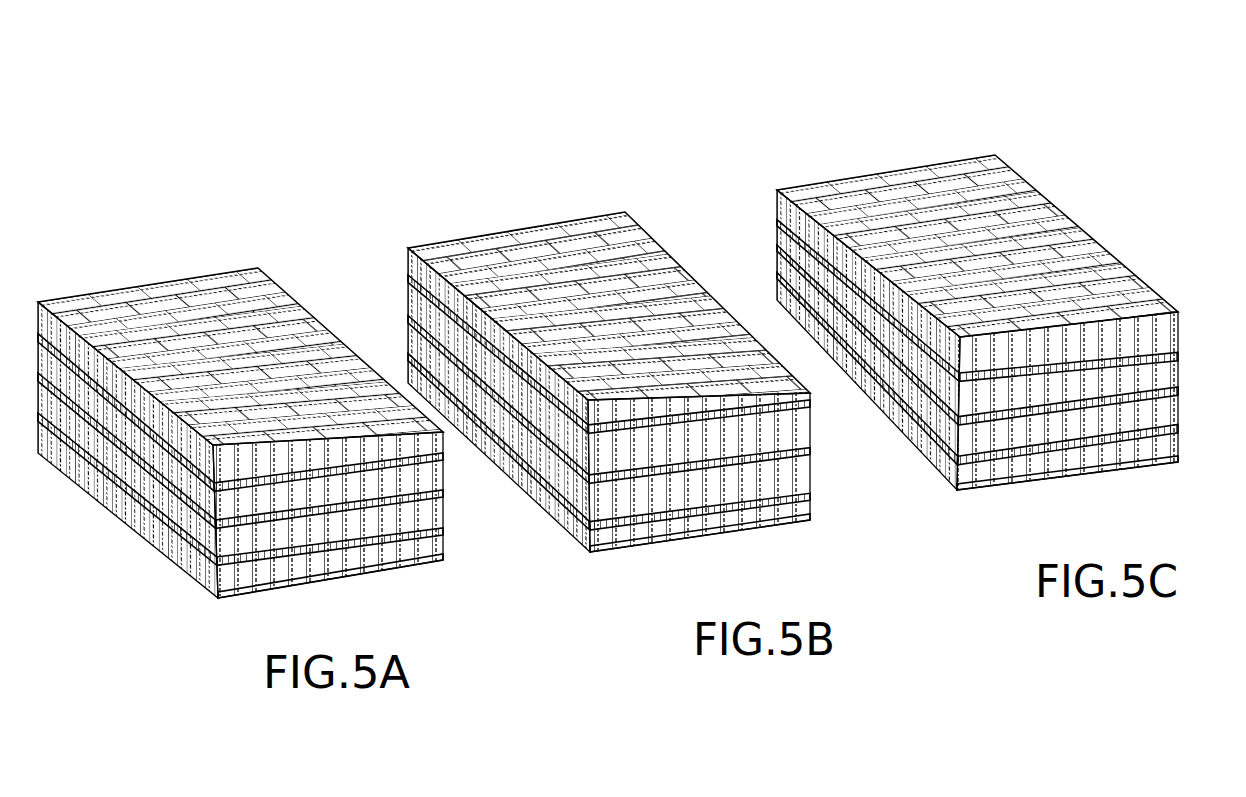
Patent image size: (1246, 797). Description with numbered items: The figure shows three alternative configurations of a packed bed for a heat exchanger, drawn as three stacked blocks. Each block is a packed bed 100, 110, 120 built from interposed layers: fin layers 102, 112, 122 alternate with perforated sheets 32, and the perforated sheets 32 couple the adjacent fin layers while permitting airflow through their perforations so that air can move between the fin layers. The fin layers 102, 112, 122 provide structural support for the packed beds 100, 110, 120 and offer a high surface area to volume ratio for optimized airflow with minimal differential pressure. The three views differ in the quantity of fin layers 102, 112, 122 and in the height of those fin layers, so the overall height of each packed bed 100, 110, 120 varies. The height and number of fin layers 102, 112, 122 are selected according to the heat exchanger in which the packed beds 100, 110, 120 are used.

In FIG. 5A, the packed bed 100 is at (252, 407).
In FIG. 5B, the packed bed 110 is at (606, 345).
In FIG. 5C, the packed bed 120 is at (977, 288).
In FIG. 5A, the perforated sheet 32 is at (442, 562).
In FIG. 5B, the perforated sheet 32 is at (810, 493).
In FIG. 5C, the perforated sheet 32 is at (1177, 422).
In FIG. 5A, the fin layer 102 is at (220, 597).
In FIG. 5B, the fin layer 112 is at (585, 537).
In FIG. 5C, the fin layer 122 is at (945, 473).